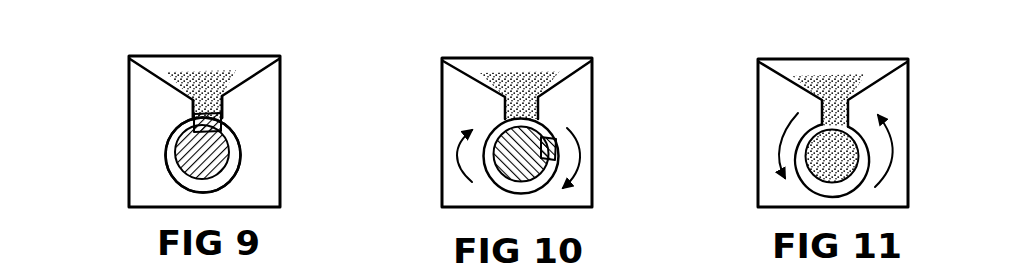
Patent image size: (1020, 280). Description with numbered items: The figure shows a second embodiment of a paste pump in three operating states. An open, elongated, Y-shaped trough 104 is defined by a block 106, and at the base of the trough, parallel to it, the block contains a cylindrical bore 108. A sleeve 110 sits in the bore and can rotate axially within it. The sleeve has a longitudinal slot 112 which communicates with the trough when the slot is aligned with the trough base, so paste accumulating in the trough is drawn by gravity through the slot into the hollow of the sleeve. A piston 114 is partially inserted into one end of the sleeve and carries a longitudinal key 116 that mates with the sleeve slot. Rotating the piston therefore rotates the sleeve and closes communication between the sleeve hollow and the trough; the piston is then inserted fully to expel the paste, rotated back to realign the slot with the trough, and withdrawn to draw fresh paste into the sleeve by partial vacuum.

In FIG. 9, the trough 104 is at (249, 67).
In FIG. 9, the block 106 is at (280, 162).
In FIG. 9, the cylindrical bore 108 is at (167, 158).
In FIG. 11, the cylindrical bore 108 is at (803, 173).
In FIG. 9, the sleeve 110 is at (168, 134).
In FIG. 11, the longitudinal slot 112 is at (830, 113).
In FIG. 9, the piston 114 is at (217, 167).
In FIG. 10, the piston 114 is at (507, 140).
In FIG. 9, the longitudinal key 116 is at (192, 101).
In FIG. 10, the longitudinal key 116 is at (553, 147).